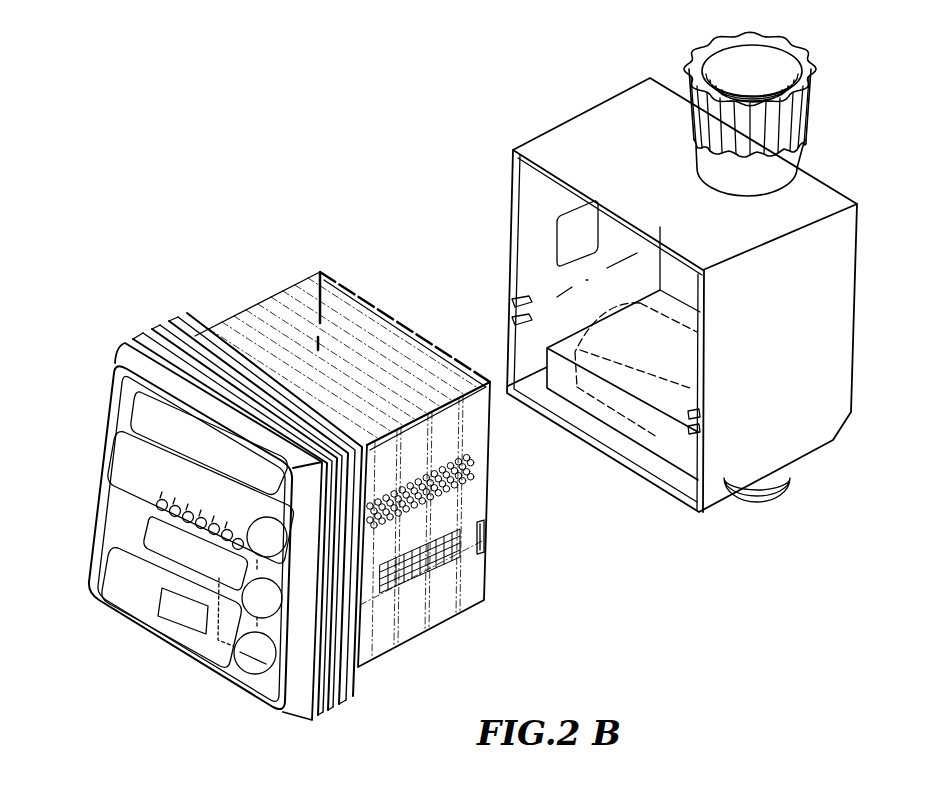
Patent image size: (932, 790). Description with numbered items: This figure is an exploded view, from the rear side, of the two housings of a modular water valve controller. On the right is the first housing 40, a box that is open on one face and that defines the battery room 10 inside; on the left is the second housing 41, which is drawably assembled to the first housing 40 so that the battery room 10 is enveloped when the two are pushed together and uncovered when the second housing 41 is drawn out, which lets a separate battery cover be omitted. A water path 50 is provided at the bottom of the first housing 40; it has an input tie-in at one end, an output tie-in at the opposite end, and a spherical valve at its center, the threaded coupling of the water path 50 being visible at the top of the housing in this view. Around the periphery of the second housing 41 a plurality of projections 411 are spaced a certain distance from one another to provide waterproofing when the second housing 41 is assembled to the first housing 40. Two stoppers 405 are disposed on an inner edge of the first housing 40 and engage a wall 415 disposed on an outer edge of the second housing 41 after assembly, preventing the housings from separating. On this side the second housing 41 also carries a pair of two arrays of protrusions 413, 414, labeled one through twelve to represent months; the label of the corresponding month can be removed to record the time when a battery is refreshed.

The battery room 10 is at (550, 367).
The first housing 40 is at (692, 312).
The second housing 41 is at (213, 327).
The water path 50 is at (767, 45).
The stopper 405 is at (511, 308).
The projections 411 is at (298, 280).
The protrusions 413 is at (477, 449).
The protrusions 414 is at (480, 478).
The wall 415 is at (485, 542).